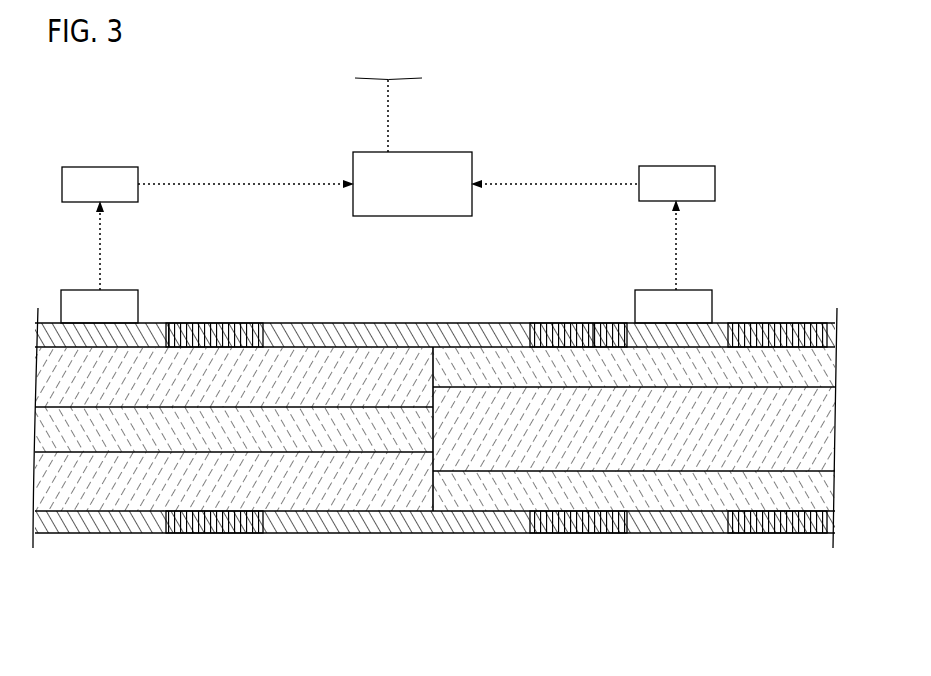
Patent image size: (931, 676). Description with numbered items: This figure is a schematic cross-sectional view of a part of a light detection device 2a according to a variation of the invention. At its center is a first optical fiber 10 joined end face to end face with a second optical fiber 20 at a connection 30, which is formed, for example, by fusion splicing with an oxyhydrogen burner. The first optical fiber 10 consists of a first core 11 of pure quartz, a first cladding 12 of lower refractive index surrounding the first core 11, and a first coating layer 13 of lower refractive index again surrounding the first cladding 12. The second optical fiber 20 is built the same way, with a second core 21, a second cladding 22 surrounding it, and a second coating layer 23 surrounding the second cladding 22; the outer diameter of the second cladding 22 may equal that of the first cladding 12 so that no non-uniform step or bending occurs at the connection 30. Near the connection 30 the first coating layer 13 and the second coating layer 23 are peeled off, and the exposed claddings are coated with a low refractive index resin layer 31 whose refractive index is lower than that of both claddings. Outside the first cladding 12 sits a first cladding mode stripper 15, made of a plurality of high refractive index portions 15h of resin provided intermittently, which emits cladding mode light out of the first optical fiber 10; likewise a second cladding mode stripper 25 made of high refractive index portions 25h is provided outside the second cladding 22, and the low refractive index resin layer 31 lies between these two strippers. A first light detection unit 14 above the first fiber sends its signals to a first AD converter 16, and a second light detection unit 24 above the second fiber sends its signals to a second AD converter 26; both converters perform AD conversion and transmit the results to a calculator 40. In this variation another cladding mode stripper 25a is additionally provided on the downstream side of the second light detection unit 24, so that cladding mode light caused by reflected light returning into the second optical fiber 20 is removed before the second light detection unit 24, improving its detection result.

The light detection device 2a is at (790, 89).
The first optical fiber 10 is at (234, 508).
The first core 11 is at (169, 438).
The first cladding 12 is at (123, 482).
The first coating layer 13 is at (72, 520).
The first light detection unit 14 is at (125, 300).
The first cladding mode stripper 15 is at (208, 312).
The high refractive index portions 15h is at (168, 322).
The first AD converter 16 is at (100, 178).
The second optical fiber 20 is at (634, 508).
The second core 21 is at (732, 448).
The second cladding 22 is at (685, 488).
The second coating layer 23 is at (642, 520).
The second light detection unit 24 is at (692, 300).
The second cladding mode stripper 25 is at (563, 312).
The cladding mode stripper 25a is at (797, 312).
The high refractive index portions 25h is at (592, 322).
The second AD converter 26 is at (665, 177).
The connection 30 is at (433, 426).
The low refractive index resin layer 31 is at (367, 333).
The calculator 40 is at (415, 172).